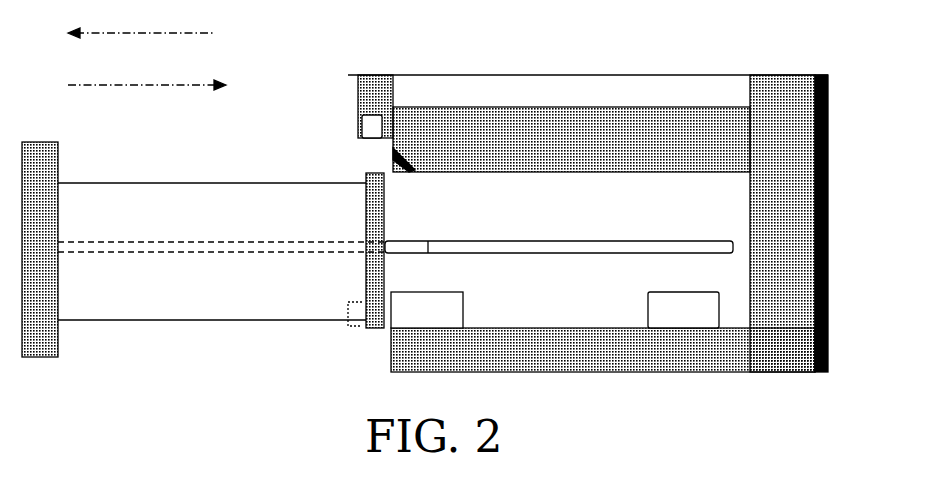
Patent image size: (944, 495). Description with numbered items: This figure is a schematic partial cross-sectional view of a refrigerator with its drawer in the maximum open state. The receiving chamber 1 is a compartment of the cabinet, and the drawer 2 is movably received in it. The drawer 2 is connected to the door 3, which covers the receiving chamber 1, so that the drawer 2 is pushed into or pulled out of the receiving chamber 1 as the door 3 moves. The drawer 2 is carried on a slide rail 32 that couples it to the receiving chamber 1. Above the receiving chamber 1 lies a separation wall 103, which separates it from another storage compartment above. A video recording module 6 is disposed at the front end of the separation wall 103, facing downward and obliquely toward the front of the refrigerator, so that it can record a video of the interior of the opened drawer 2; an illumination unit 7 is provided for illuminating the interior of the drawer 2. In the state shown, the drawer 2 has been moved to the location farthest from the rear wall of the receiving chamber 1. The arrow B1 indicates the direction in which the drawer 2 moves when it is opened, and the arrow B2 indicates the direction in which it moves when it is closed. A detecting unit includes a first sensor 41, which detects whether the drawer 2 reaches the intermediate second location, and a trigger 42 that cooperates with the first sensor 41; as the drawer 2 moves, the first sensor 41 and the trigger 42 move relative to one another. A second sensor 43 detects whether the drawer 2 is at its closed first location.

The receiving chamber 1 is at (588, 223).
The drawer 2 is at (148, 192).
The door 3 is at (42, 173).
The video recording module 6 is at (415, 165).
The illumination unit 7 is at (362, 125).
The slide rail 32 is at (472, 243).
The first sensor 41 is at (463, 310).
The trigger 42 is at (360, 323).
The second sensor 43 is at (655, 305).
The separation wall 103 is at (503, 118).
The arrow indicating drawer opening direction B1 is at (157, 31).
The arrow indicating drawer closing direction B2 is at (163, 86).